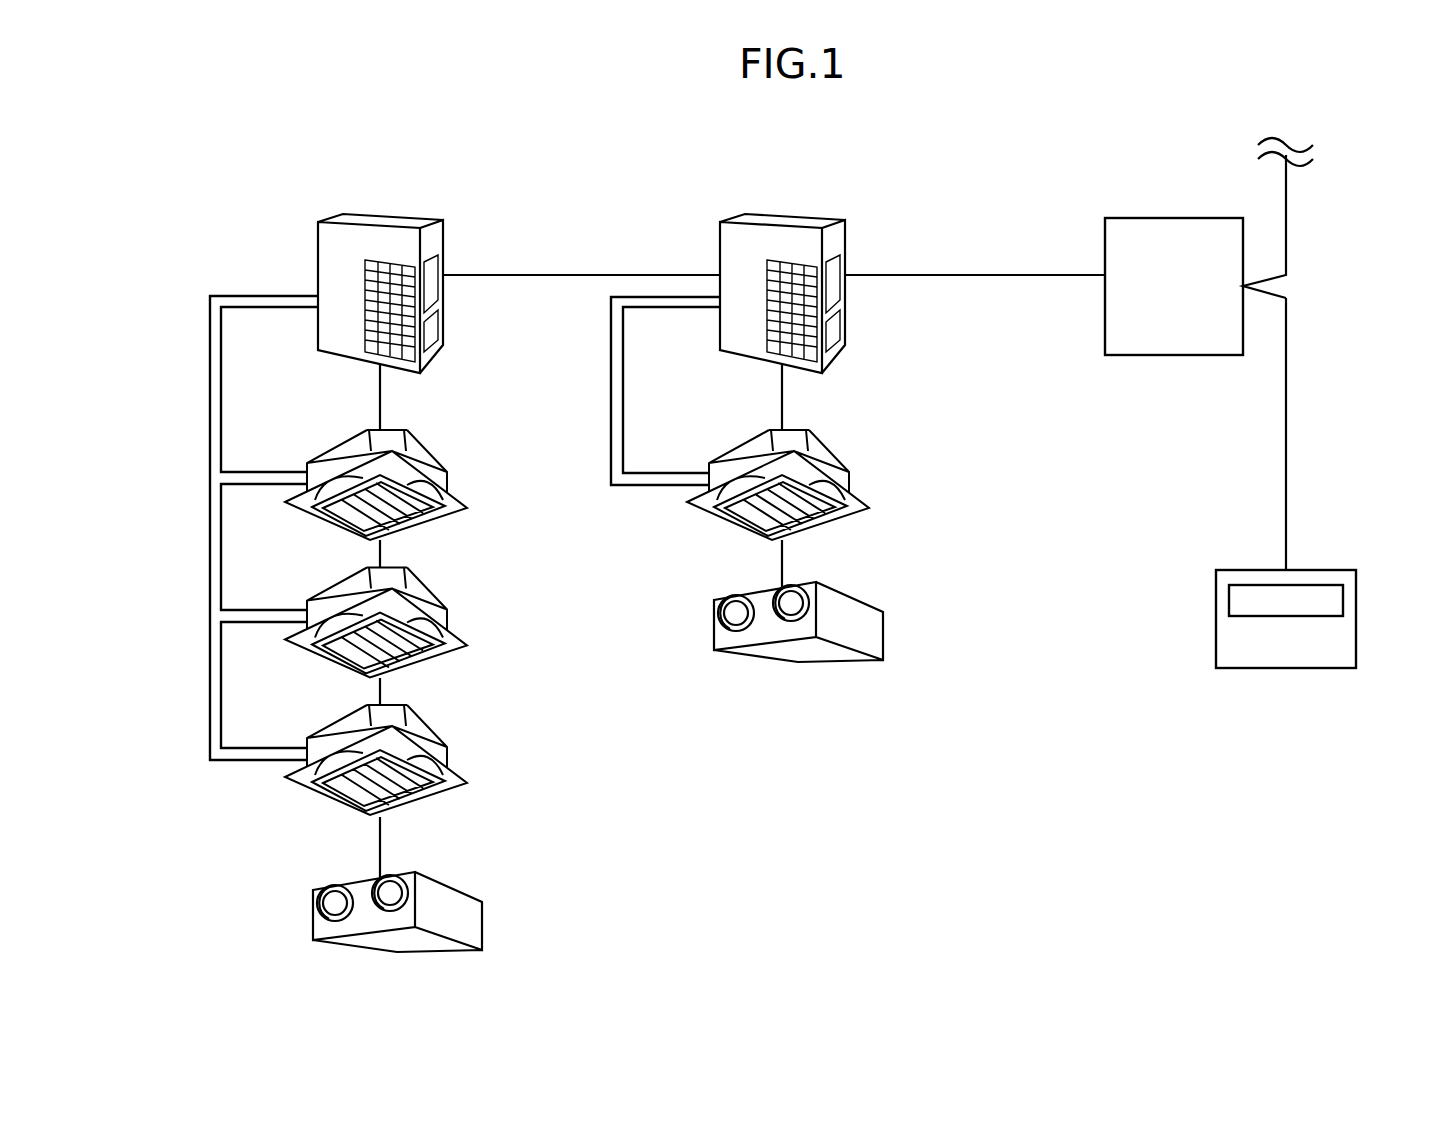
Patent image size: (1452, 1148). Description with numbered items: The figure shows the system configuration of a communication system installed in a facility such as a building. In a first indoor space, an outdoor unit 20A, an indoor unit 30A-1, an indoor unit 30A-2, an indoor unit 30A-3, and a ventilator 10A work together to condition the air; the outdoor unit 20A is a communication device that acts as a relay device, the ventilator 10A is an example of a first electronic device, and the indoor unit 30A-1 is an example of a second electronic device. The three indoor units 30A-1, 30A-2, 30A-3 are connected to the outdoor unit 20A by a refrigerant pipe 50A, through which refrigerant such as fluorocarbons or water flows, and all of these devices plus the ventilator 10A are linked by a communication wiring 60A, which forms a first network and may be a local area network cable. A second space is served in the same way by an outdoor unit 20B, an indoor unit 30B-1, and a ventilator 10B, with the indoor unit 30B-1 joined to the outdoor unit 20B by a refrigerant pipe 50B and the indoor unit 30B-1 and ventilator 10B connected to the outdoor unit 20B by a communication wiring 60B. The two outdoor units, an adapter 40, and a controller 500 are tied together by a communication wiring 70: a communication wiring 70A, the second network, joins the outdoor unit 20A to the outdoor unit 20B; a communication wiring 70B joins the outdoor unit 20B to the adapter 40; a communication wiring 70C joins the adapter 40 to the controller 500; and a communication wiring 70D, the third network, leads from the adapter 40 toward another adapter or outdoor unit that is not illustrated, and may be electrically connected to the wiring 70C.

The ventilator 10A is at (450, 883).
The ventilator 10B is at (850, 593).
The outdoor unit 20A is at (415, 216).
The outdoor unit 20B is at (817, 216).
The indoor unit 30A-1 is at (428, 447).
The indoor unit 30A-2 is at (428, 584).
The indoor unit 30A-3 is at (428, 722).
The indoor unit 30B-1 is at (830, 447).
The adapter 40 is at (1198, 217).
The refrigerant pipe 50A is at (209, 358).
The refrigerant pipe 50B is at (611, 358).
The communication wiring 60A is at (380, 398).
The communication wiring 60B is at (782, 398).
The communication wiring 70 is at (943, 399).
The communication wiring 70A is at (562, 275).
The communication wiring 70B is at (954, 275).
The communication wiring 70C is at (1286, 462).
The communication wiring 70D is at (1288, 208).
The controller 500 is at (1310, 569).